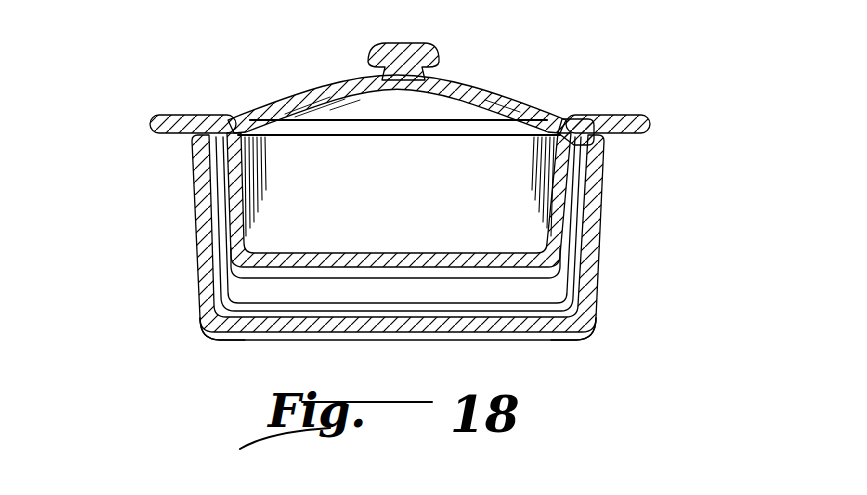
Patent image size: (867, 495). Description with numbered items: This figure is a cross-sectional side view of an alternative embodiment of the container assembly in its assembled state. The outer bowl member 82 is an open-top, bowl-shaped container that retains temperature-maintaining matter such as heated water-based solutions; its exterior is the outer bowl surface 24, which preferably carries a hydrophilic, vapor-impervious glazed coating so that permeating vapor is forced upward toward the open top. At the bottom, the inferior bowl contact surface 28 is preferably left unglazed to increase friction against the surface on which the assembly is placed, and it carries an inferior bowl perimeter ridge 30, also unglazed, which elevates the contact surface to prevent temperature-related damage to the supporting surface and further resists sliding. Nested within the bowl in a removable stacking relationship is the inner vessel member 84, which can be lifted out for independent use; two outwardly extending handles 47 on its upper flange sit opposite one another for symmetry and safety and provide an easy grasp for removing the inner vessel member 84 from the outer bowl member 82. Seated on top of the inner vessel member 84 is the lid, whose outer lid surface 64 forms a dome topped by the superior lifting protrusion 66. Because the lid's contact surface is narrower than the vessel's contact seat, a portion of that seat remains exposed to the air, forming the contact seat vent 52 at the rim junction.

The outer bowl surface 24 is at (198, 246).
The inferior bowl contact surface 28 is at (253, 338).
The inferior bowl perimeter ridge 30 is at (567, 340).
The outwardly extending handle 47 is at (148, 121).
The contact seat vent 52 is at (580, 117).
The outer lid surface 64 is at (483, 78).
The superior lifting protrusion 66 is at (381, 44).
The outer bowl member 82 is at (601, 228).
The inner vessel member 84 is at (232, 187).